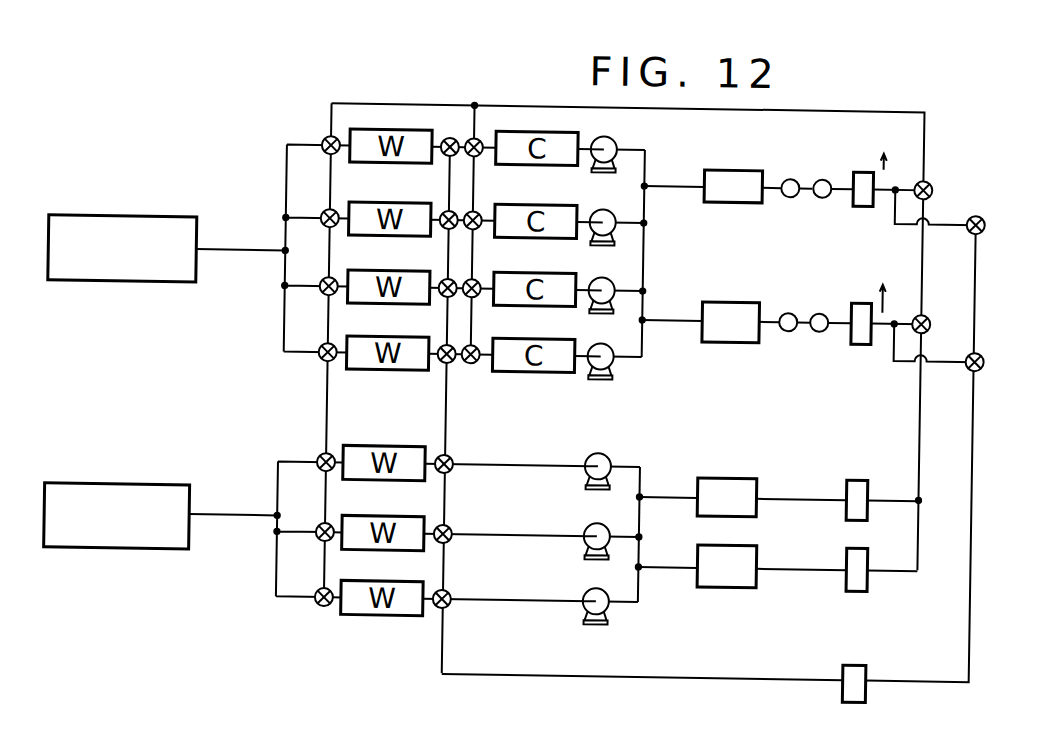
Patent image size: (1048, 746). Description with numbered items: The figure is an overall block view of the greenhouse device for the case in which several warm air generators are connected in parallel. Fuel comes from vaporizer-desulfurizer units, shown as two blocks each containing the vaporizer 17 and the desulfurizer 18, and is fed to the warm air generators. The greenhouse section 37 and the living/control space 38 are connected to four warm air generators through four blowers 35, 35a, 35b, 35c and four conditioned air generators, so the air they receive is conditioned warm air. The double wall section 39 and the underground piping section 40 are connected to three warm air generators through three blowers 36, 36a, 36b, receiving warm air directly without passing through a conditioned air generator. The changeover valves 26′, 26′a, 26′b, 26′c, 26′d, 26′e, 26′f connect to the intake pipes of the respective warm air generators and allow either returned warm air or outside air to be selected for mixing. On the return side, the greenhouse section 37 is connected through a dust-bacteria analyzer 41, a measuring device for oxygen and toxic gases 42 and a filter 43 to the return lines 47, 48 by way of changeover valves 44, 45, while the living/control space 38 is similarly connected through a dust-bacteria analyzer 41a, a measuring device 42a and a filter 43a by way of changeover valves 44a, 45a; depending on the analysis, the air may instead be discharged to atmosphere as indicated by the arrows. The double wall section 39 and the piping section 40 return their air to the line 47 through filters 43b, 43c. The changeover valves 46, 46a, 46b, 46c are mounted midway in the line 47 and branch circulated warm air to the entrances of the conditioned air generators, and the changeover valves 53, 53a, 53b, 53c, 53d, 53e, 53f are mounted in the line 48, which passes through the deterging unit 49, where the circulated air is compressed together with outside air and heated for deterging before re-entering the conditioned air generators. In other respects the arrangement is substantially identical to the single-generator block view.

The vaporizer 17 is at (122, 248).
The desulfurizer 18 is at (117, 516).
The changeover valve 26′ is at (321, 142).
The changeover valve 26′a is at (320, 221).
The changeover valve 26′b is at (320, 291).
The changeover valve 26′c is at (320, 357).
The changeover valve 26′d is at (320, 464).
The changeover valve 26′e is at (319, 538).
The changeover valve 26′f is at (318, 604).
The blower 35 is at (607, 140).
The blower 35a is at (610, 213).
The blower 35b is at (608, 282).
The blower 35c is at (613, 362).
The blower 36 is at (591, 456).
The blower 36a is at (590, 526).
The blower 36b is at (590, 595).
The greenhouse section 37 is at (722, 169).
The living and control space 38 is at (725, 301).
The double wall section 39 is at (724, 477).
The underground piping section 40 is at (731, 586).
The dust-bacteria analyzer 41 is at (786, 177).
The measuring device for oxygen and toxic gases 42 is at (818, 177).
The dust-bacteria analyzer 41a is at (786, 311).
The measuring device 42a is at (818, 311).
The filter 43 is at (860, 169).
The filter 43a is at (860, 300).
The filter 43b is at (858, 477).
The filter 43c is at (858, 588).
The changeover valve 44 is at (927, 179).
The changeover valve 44a is at (927, 313).
The changeover valve 45 is at (982, 196).
The changeover valve 45a is at (981, 365).
The changeover valve 46 is at (472, 139).
The changeover valve 46a is at (473, 214).
The changeover valve 46b is at (472, 300).
The changeover valve 46c is at (472, 366).
The line 47 is at (921, 142).
The pipe 48 is at (975, 307).
The deterging unit 49 is at (847, 668).
The changeover valve 53 is at (447, 141).
The changeover valve 53a is at (445, 214).
The changeover valve 53b is at (446, 300).
The changeover valve 53c is at (447, 366).
The changeover valve 53d is at (450, 474).
The changeover valve 53e is at (450, 544).
The changeover valve 53f is at (450, 609).